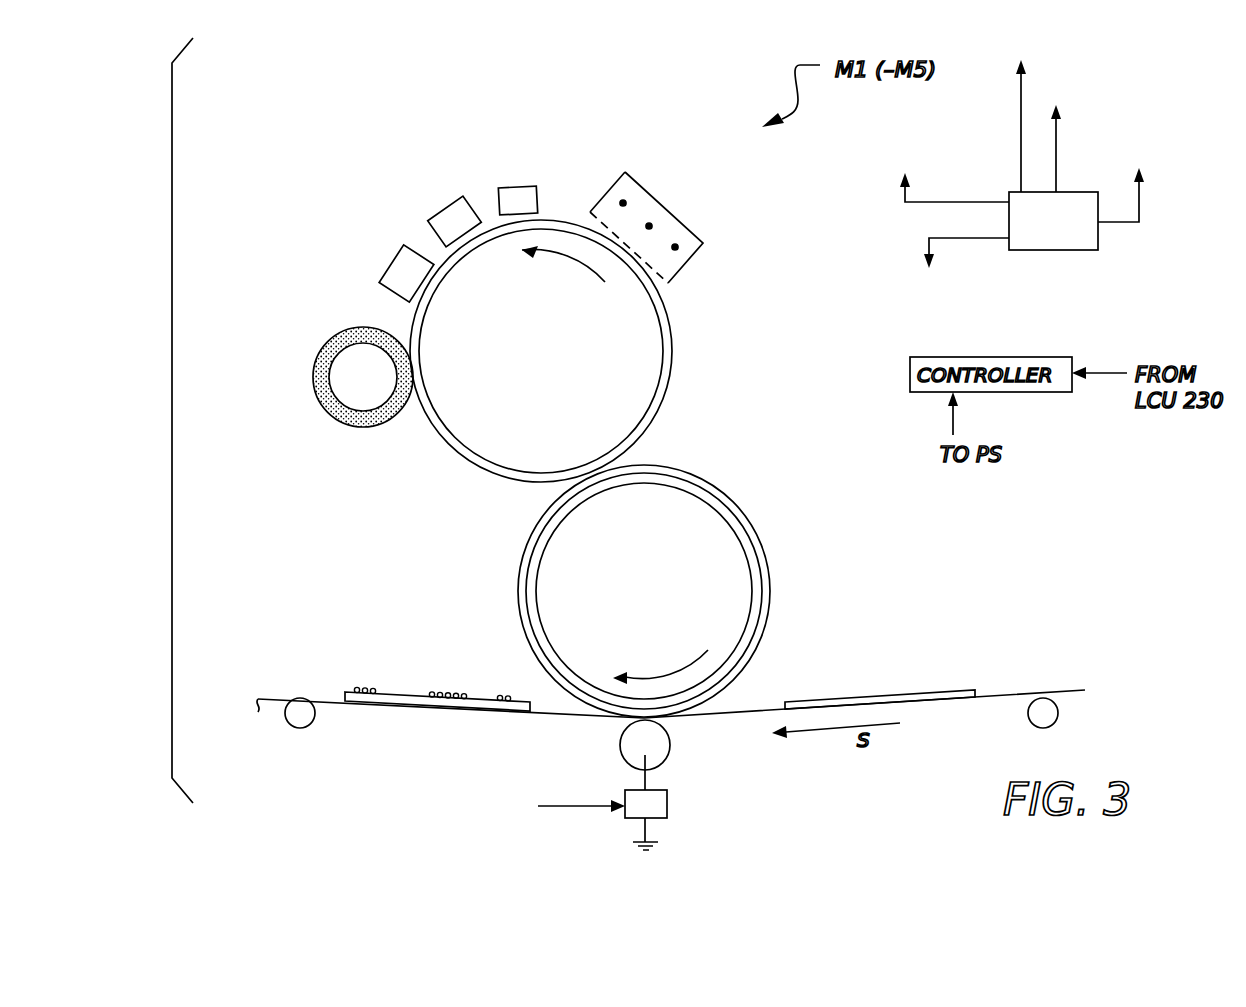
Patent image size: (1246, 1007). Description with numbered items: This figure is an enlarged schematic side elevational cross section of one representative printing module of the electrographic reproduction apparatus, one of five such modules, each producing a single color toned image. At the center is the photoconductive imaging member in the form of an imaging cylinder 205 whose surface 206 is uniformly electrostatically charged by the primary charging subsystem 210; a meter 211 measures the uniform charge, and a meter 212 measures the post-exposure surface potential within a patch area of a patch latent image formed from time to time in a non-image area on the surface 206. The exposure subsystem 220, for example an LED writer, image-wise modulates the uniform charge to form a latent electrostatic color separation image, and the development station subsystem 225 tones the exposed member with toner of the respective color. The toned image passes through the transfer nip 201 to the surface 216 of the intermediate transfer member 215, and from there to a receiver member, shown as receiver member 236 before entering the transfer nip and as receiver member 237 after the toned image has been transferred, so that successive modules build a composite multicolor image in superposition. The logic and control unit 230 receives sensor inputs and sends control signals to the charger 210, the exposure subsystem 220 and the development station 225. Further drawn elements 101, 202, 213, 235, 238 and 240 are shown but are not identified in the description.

The belt support roller 101 is at (280, 700).
The transfer nip 201 is at (553, 493).
The transport belt 202 is at (710, 709).
The imaging cylinder 205 is at (692, 370).
The surface of photoconductive imaging member 206 is at (657, 418).
The primary charging subsystem 210 is at (682, 197).
The meter for measuring the uniform electrostatic charge 211 is at (510, 178).
The meter for measuring post-exposure surface potential 212 is at (401, 247).
The cleaning station 213 is at (603, 221).
The intermediate transfer member 215 is at (788, 586).
The surface of the intermediate transfer member 216 is at (740, 514).
The exposure subsystem 220 is at (442, 198).
The development station subsystem 225 is at (308, 380).
The logic and control unit (LCU) 230 is at (1098, 232).
The transfer backup roller 235 is at (621, 752).
The receiver member 236 is at (905, 702).
The receiver member 237 is at (404, 692).
The rollers 238 is at (455, 694).
The power supply 240 is at (700, 803).